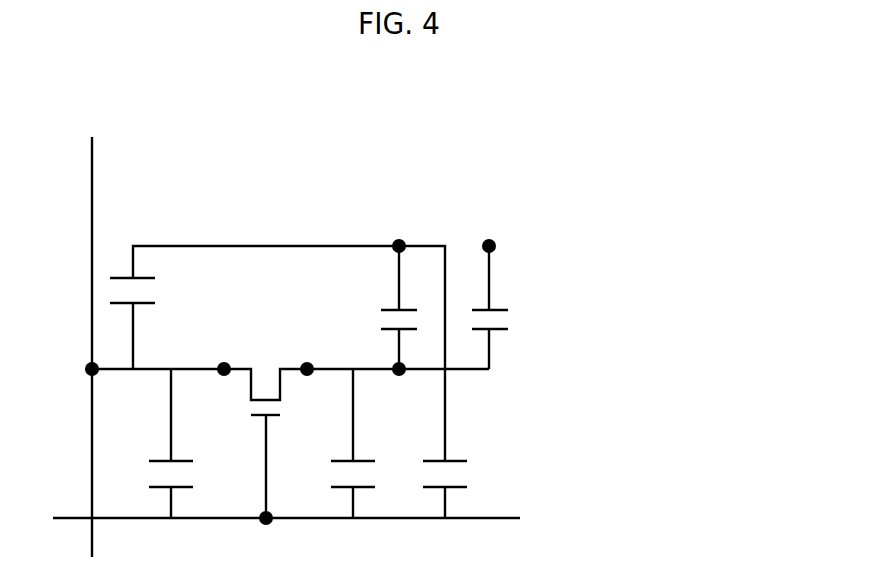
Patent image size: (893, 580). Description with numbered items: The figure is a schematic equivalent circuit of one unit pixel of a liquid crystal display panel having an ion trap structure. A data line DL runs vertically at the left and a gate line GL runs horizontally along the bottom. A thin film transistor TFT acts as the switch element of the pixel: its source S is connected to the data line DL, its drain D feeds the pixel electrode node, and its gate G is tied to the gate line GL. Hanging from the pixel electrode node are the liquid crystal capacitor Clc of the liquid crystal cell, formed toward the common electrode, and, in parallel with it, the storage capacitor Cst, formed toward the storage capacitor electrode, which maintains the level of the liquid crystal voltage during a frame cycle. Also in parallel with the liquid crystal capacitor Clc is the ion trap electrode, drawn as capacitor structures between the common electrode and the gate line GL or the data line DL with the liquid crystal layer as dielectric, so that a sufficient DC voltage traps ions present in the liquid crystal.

The data line DL is at (95, 334).
The gate line GL is at (302, 520).
The thin film transistor TFT is at (253, 410).
The source electrode S is at (232, 358).
The drain electrode D is at (298, 358).
The gate electrode G is at (273, 473).
The liquid crystal capacitor Clc is at (382, 307).
The storage capacitor Cst is at (509, 318).